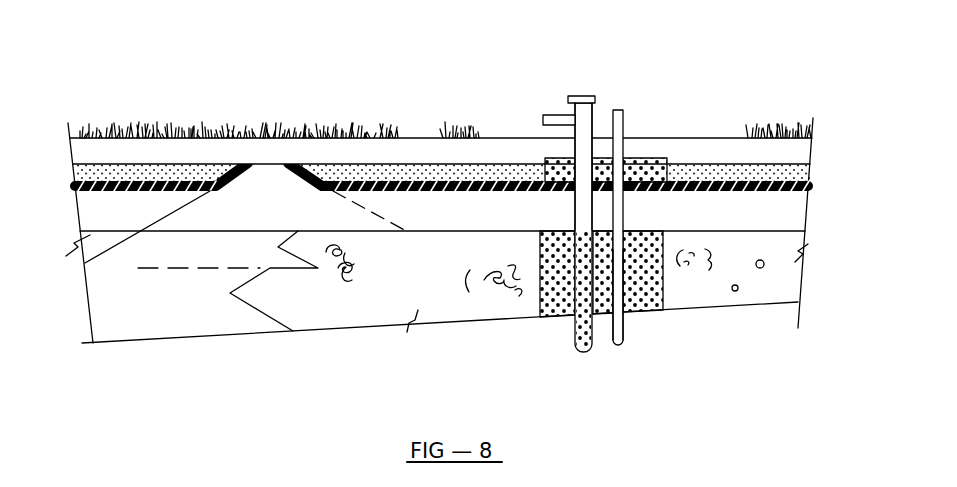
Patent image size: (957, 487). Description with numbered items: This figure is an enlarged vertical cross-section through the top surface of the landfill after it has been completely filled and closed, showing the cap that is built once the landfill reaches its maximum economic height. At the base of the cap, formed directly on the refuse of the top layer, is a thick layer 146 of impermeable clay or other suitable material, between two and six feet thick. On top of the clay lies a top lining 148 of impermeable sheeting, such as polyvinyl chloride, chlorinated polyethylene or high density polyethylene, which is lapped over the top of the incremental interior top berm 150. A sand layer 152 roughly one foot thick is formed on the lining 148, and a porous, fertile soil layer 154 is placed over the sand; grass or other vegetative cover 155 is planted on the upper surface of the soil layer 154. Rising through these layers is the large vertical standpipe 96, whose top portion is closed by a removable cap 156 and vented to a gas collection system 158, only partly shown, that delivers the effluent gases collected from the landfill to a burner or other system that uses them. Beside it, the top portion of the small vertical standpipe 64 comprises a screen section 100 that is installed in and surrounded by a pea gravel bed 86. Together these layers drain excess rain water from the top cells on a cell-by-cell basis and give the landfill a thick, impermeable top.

The vegetative cover 155 is at (132, 118).
The soil layer 154 is at (437, 147).
The sand layer 152 is at (513, 170).
The top lining 148 is at (770, 180).
The layer of impermeable clay 146 is at (778, 210).
The incremental interior top berm 150 is at (285, 192).
The pea gravel bed 86 is at (672, 165).
The removable cap 156 is at (588, 97).
The large vertical standpipe 96 is at (590, 115).
The gas collection system 158 is at (552, 115).
The screen section 100 is at (618, 168).
The small vertical standpipe 64 is at (619, 322).